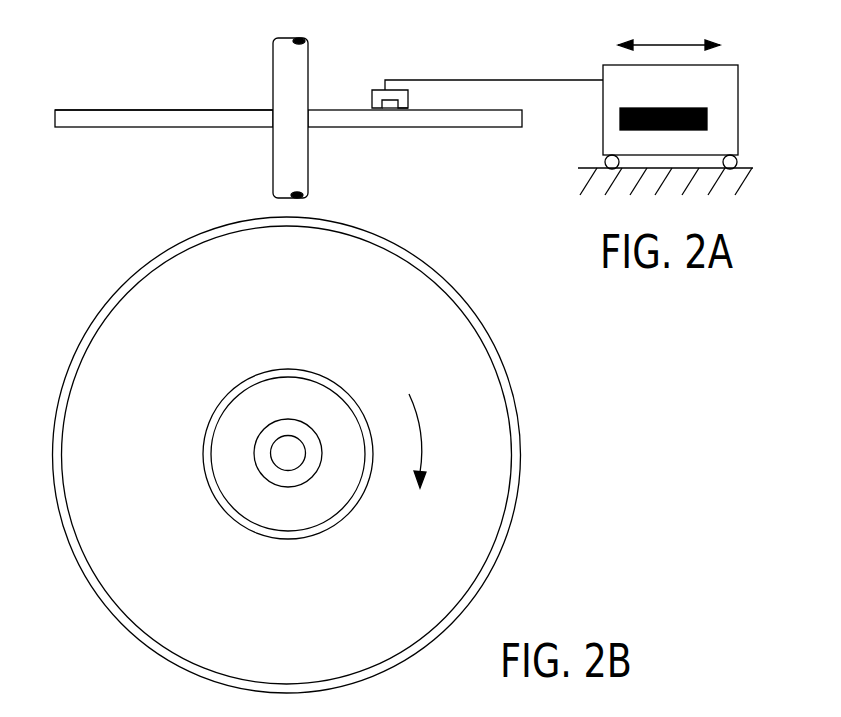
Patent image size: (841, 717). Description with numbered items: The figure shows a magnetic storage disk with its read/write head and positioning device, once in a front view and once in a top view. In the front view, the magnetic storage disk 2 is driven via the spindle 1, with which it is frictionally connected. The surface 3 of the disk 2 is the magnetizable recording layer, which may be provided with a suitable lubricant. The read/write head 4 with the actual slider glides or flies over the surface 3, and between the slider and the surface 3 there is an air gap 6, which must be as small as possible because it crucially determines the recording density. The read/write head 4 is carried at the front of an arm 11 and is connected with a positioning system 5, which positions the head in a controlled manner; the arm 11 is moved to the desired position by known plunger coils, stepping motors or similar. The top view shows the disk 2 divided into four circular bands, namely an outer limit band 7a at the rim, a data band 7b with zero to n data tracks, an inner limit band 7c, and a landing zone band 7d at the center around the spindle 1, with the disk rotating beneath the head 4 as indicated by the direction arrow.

In FIG. 2A, the spindle 1 is at (282, 73).
In FIG. 2A, the magnetic storage disk 2 is at (90, 120).
In FIG. 2A, the surface 3 is at (135, 112).
In FIG. 2A, the read/write head 4 is at (372, 97).
In FIG. 2A, the positioning system 5 is at (729, 97).
In FIG. 2A, the air gap 6 is at (407, 108).
In FIG. 2A, the arm 11 is at (535, 80).
In FIG. 2B, the outer limit band 7a is at (78, 360).
In FIG. 2B, the data band 7b is at (156, 421).
In FIG. 2B, the inner limit band 7c is at (230, 398).
In FIG. 2B, the landing zone band 7d is at (318, 416).